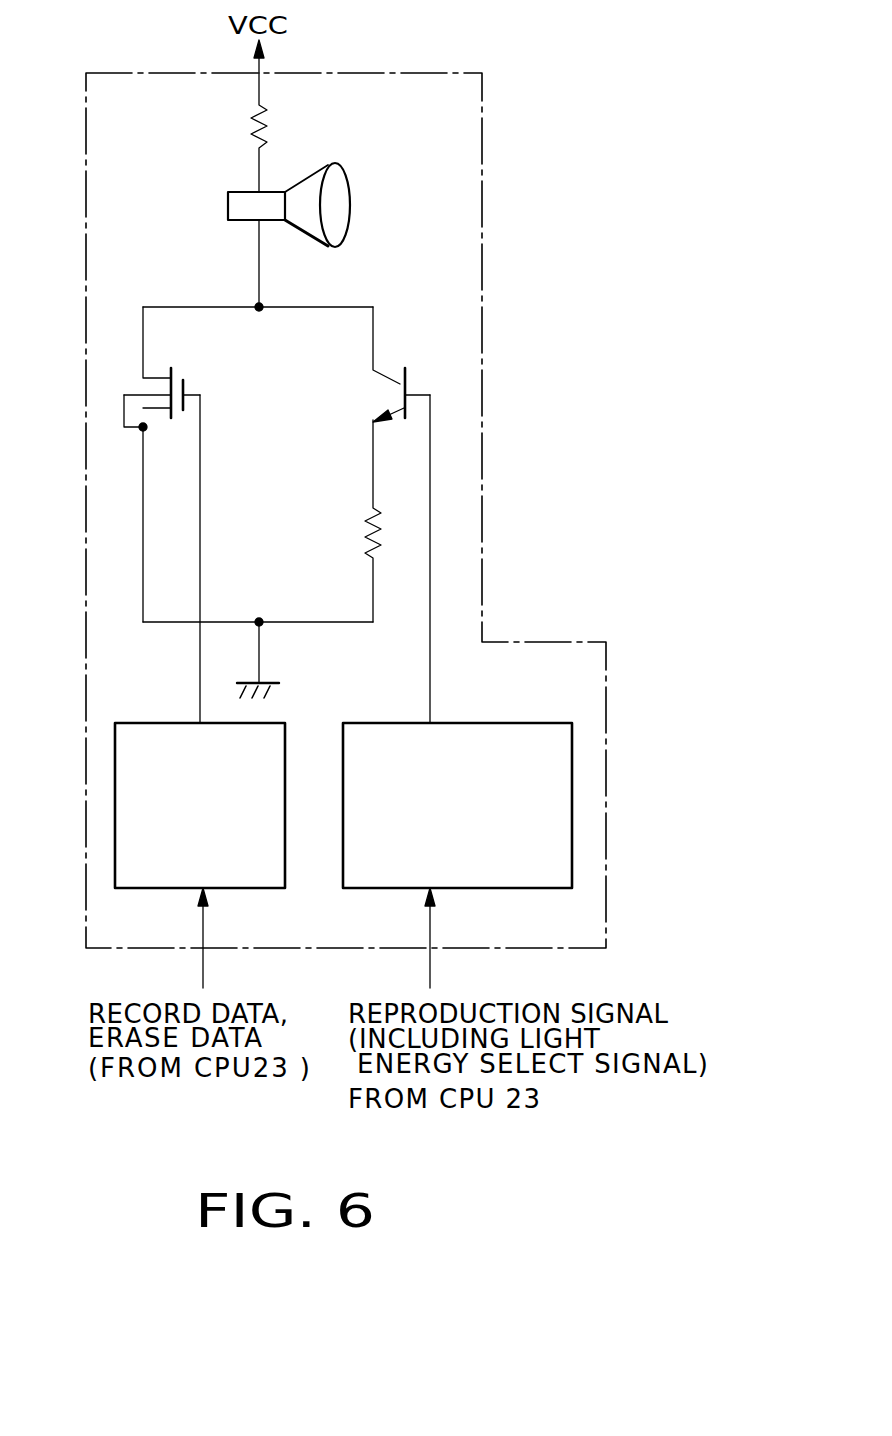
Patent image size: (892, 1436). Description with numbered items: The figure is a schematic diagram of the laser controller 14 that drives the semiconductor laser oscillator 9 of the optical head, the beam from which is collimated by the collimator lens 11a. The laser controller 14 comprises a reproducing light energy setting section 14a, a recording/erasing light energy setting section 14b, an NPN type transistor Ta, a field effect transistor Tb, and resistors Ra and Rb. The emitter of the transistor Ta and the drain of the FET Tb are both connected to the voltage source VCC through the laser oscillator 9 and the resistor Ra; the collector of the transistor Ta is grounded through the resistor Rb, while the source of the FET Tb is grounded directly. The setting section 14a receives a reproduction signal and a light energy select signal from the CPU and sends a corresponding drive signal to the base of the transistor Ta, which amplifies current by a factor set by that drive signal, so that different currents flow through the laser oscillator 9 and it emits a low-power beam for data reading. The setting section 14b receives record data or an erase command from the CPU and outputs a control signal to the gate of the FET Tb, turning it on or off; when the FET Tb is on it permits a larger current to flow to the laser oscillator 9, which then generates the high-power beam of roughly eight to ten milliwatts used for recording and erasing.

The semiconductor laser oscillator 9 is at (228, 206).
The collimator lens 11a is at (343, 182).
The laser controller 14 is at (482, 353).
The reproducing light energy setting section 14a is at (518, 720).
The recording/erasing light energy setting section 14b is at (152, 720).
The resistor Ra is at (272, 124).
The resistor Rb is at (362, 530).
The NPN type transistor Ta is at (392, 376).
The FET (Field Effect Transistor) Tb is at (162, 370).